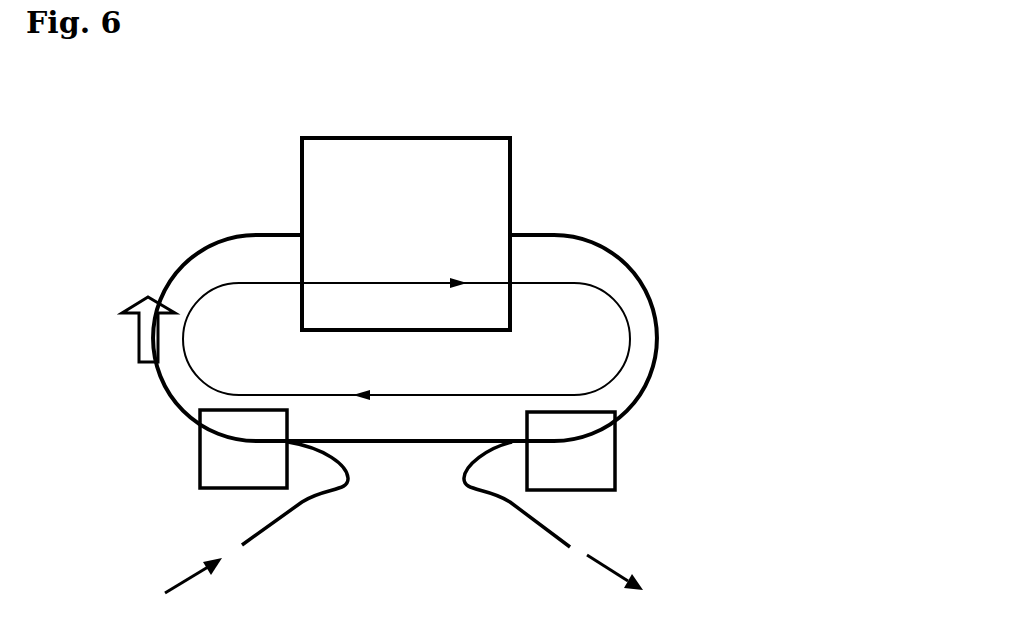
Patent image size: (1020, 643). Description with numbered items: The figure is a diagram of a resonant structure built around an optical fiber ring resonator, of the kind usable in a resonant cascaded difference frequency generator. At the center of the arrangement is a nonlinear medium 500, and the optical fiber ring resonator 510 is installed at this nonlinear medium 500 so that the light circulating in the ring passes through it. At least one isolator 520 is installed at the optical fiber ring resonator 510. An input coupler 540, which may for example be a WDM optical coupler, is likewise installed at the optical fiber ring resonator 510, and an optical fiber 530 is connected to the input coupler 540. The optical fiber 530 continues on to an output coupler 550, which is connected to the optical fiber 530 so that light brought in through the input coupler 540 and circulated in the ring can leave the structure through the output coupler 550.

The nonlinear medium 500 is at (468, 138).
The optical fiber ring resonator 510 is at (658, 338).
The isolator 520 is at (137, 337).
The optical fiber 530 is at (278, 530).
The input coupler 540 is at (199, 456).
The output coupler 550 is at (615, 458).